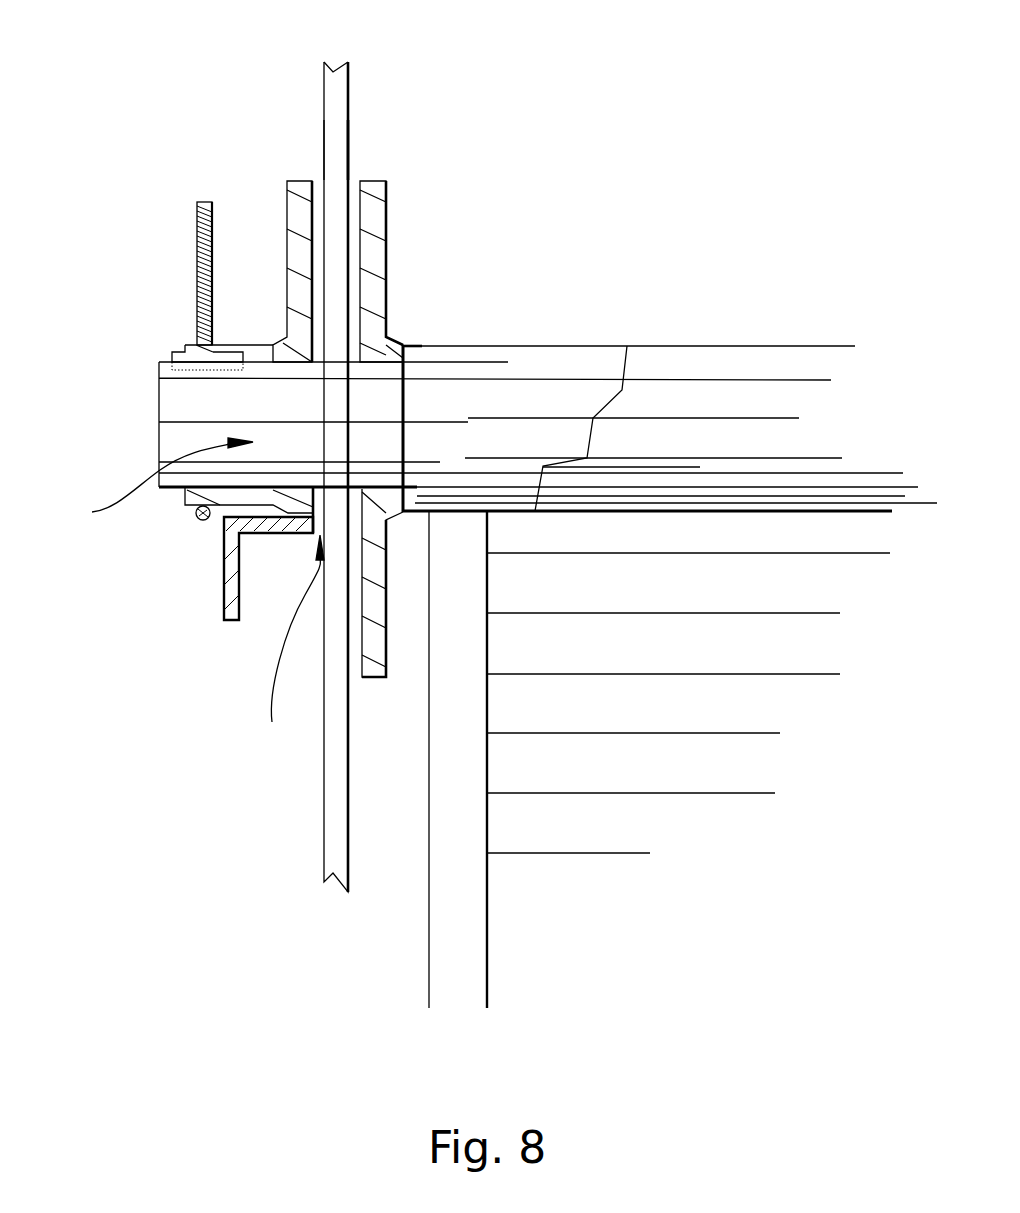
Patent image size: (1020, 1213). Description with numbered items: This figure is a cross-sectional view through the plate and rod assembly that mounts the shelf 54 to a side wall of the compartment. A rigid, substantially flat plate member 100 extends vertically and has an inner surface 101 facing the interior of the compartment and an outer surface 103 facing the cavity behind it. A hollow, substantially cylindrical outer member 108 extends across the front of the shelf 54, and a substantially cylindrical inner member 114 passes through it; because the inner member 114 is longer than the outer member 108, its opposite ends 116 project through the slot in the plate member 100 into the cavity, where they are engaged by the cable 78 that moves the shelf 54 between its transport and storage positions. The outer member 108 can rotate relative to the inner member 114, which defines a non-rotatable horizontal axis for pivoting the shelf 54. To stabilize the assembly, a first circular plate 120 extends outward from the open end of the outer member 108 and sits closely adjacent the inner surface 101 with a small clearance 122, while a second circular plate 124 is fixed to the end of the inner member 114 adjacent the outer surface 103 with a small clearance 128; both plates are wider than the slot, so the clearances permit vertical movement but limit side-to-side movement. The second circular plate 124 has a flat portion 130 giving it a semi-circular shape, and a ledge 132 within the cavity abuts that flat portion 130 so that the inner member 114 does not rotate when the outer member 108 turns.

The shelf 54 is at (542, 918).
The cable 78 is at (197, 273).
The plate member 100 is at (337, 107).
The inner surface 101 is at (347, 173).
The outer surface 103 is at (323, 173).
The outer member 108 is at (583, 367).
The inner member 114 is at (375, 402).
The opposite ends of the inner member 116 is at (152, 478).
The first circular plate 120 is at (373, 262).
The clearance 122 is at (349, 680).
The second circular plate 124 is at (292, 222).
The clearance 128 is at (291, 645).
The flat portion 130 is at (294, 532).
The ledge 132 is at (240, 519).